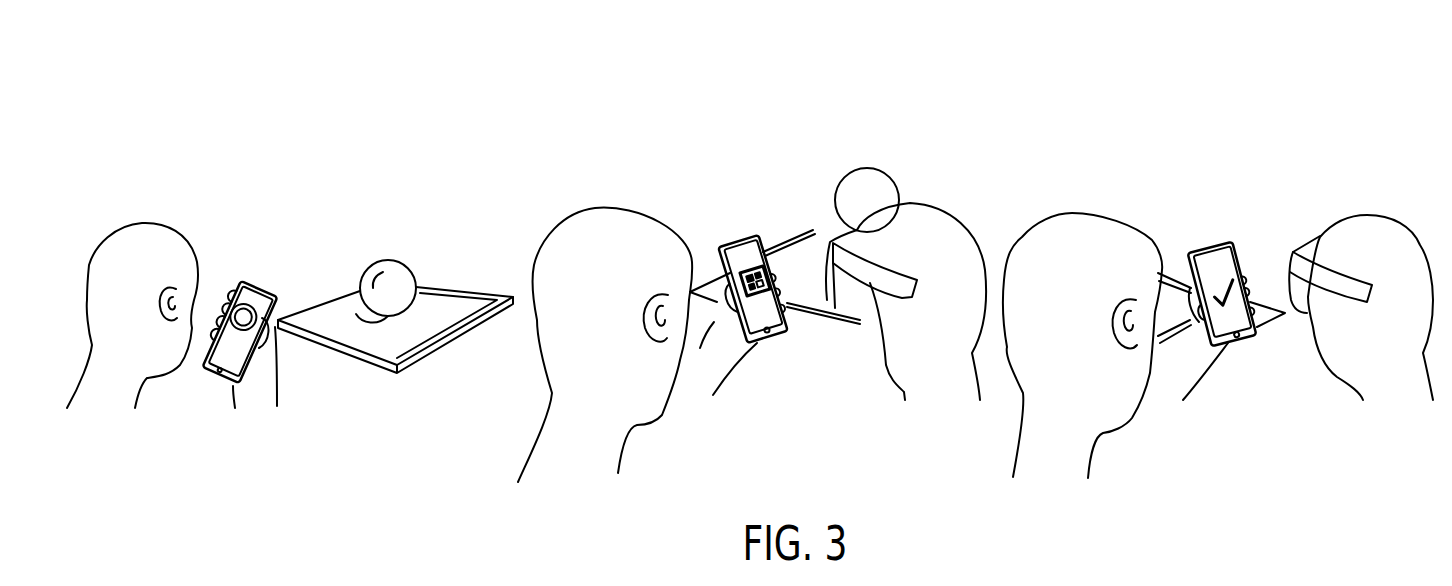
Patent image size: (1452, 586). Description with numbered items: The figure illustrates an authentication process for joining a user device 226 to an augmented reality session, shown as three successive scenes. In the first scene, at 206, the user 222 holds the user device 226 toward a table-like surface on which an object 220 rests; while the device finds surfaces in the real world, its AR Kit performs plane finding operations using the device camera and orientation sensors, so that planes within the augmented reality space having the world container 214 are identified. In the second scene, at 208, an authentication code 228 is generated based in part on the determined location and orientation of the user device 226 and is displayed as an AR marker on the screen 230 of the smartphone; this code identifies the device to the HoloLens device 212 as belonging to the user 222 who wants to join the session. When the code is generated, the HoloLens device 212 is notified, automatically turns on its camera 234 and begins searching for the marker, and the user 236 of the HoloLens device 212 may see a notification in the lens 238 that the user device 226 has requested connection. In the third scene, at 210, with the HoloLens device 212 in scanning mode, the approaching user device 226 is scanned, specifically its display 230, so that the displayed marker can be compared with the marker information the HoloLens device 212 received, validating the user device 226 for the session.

The plane finding stage 206 is at (328, 173).
The authentication code generation stage 208 is at (768, 181).
The scanning stage 210 is at (1187, 153).
The HoloLens device 212 is at (850, 283).
The world container 214 is at (433, 338).
The physical object (ball) 220 is at (403, 273).
The user 222 is at (166, 256).
The user device 226 is at (255, 290).
The authentication code 228 is at (765, 333).
The screen 230 is at (768, 237).
The camera 234 is at (850, 245).
The user of the HoloLens device 236 is at (913, 323).
The lens 238 is at (833, 245).